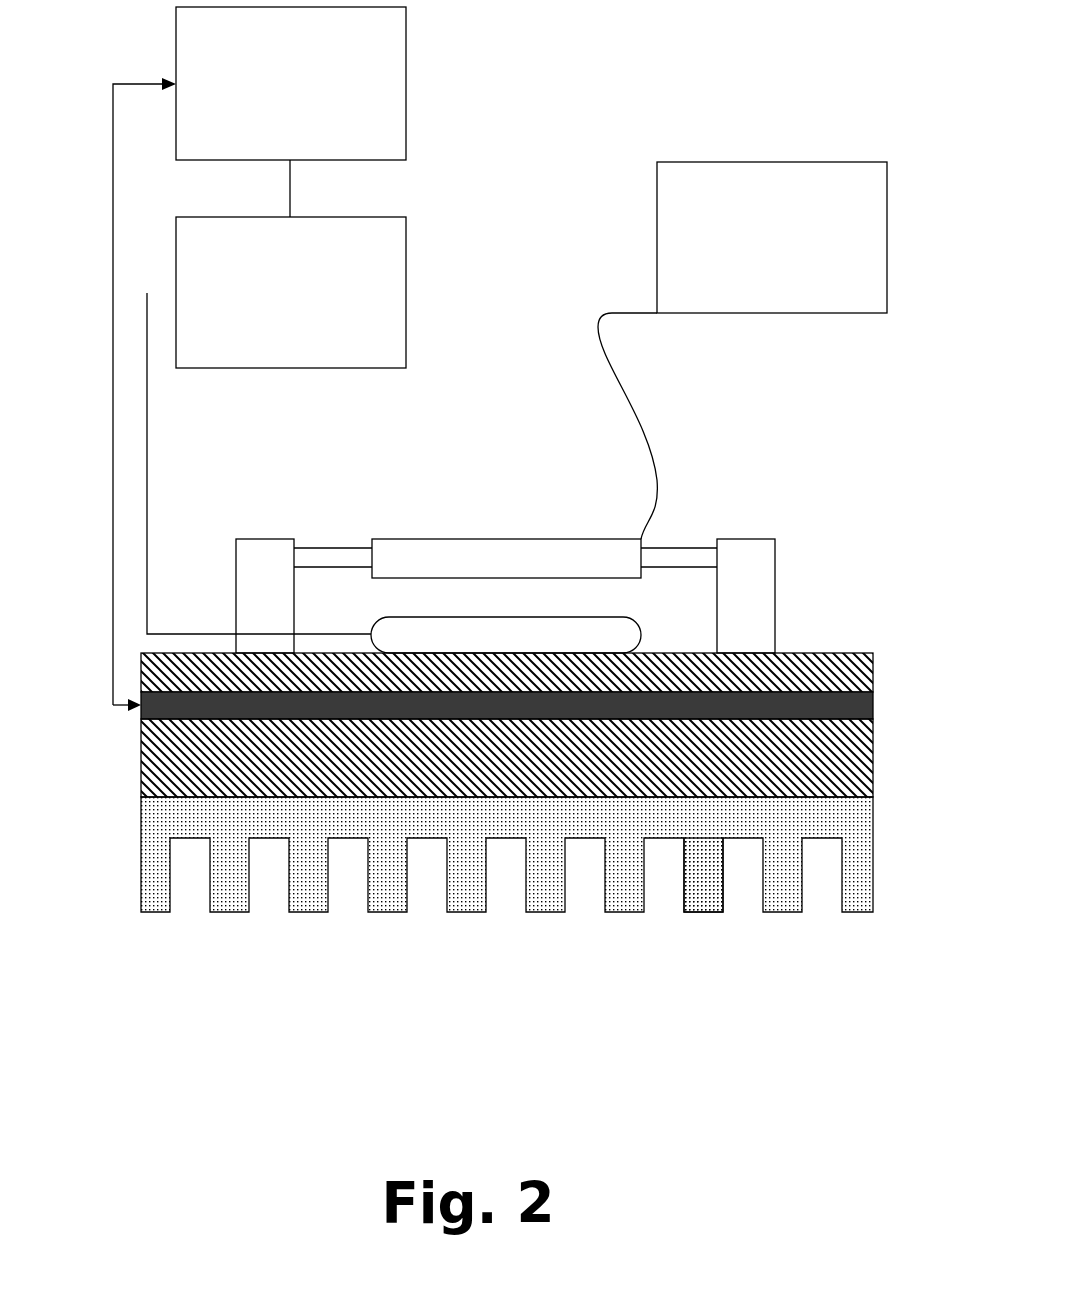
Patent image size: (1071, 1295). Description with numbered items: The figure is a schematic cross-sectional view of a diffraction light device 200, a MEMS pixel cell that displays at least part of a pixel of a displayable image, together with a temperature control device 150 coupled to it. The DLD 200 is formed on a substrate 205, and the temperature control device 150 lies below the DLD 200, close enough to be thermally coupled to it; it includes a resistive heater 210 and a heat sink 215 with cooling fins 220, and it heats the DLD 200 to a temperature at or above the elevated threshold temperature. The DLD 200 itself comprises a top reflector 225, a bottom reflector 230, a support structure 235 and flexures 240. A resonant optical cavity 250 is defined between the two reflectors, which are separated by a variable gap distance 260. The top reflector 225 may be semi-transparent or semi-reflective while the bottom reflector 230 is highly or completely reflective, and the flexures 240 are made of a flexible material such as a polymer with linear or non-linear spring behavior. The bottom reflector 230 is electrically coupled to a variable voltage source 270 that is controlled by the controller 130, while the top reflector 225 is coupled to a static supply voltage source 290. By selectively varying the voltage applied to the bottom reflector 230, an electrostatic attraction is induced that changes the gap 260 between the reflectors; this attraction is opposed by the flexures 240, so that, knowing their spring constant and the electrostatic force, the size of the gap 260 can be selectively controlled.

The controller 130 is at (270, 112).
The variable voltage source 270 is at (270, 351).
The static supply voltage source 290 is at (751, 293).
The diffraction light device 200 is at (476, 452).
The top reflector 225 is at (507, 538).
The flexures 240 is at (333, 547).
The support structure 235 is at (252, 540).
The resonant optical cavity 250 is at (480, 612).
The bottom reflector 230 is at (484, 649).
The variable gap distance 260 is at (366, 593).
The temperature control device 150 is at (80, 870).
The substrate 205 is at (873, 670).
The resistive heater 210 is at (873, 707).
The heat sink 215 is at (895, 858).
The cooling fins 220 is at (693, 913).